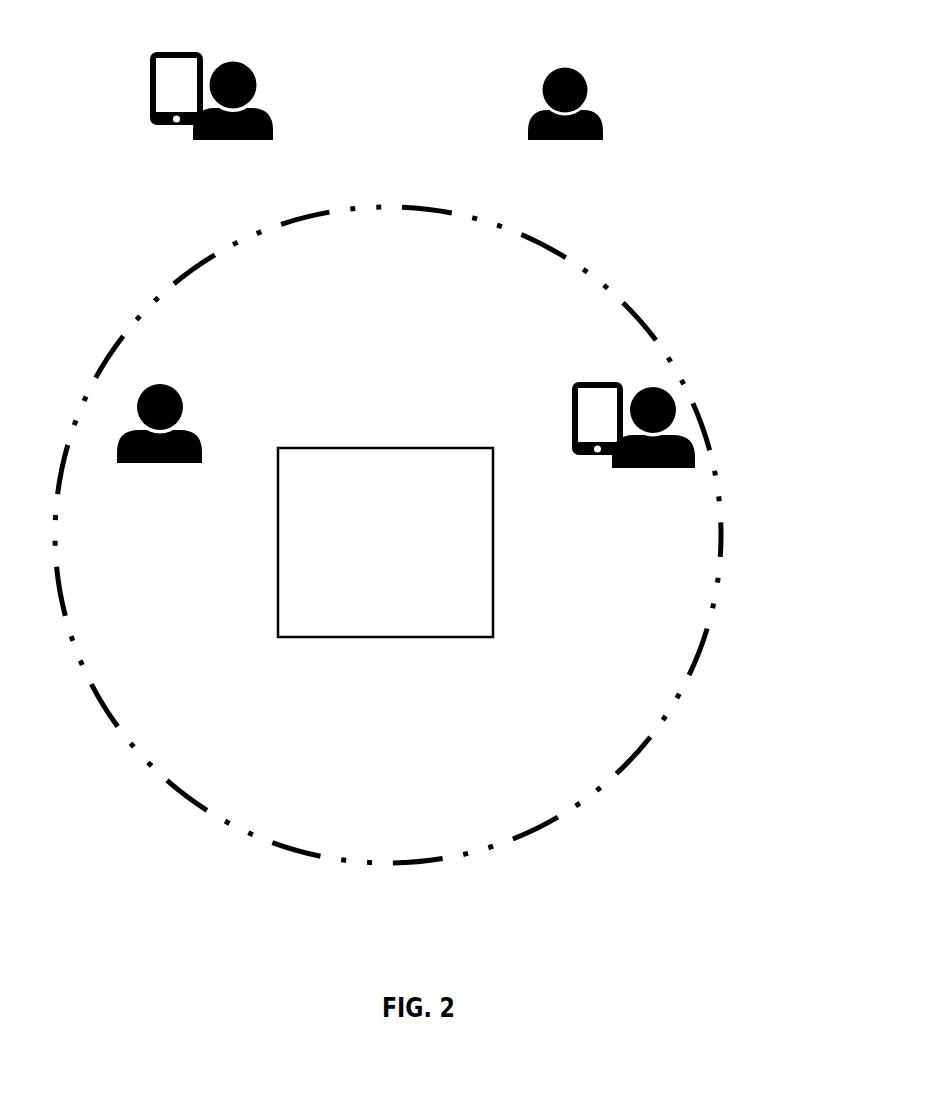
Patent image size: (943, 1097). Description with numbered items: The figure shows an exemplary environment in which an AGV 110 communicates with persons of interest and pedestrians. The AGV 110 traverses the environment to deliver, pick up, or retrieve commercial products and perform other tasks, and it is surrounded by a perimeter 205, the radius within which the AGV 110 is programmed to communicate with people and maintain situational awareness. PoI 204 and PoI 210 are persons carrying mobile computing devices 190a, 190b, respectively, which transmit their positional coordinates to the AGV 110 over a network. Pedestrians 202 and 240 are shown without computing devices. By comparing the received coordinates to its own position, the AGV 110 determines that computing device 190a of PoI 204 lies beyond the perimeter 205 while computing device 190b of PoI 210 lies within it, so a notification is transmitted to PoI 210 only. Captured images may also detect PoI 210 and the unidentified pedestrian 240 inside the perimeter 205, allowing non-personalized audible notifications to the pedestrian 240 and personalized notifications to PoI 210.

The AGV 110 is at (472, 617).
The computing device 190a is at (148, 78).
The computing device 190b is at (572, 390).
The pedestrian 202 is at (528, 126).
The PoI 204 is at (257, 88).
The perimeter 205 is at (618, 300).
The PoI 210 is at (660, 468).
The pedestrian 240 is at (184, 398).